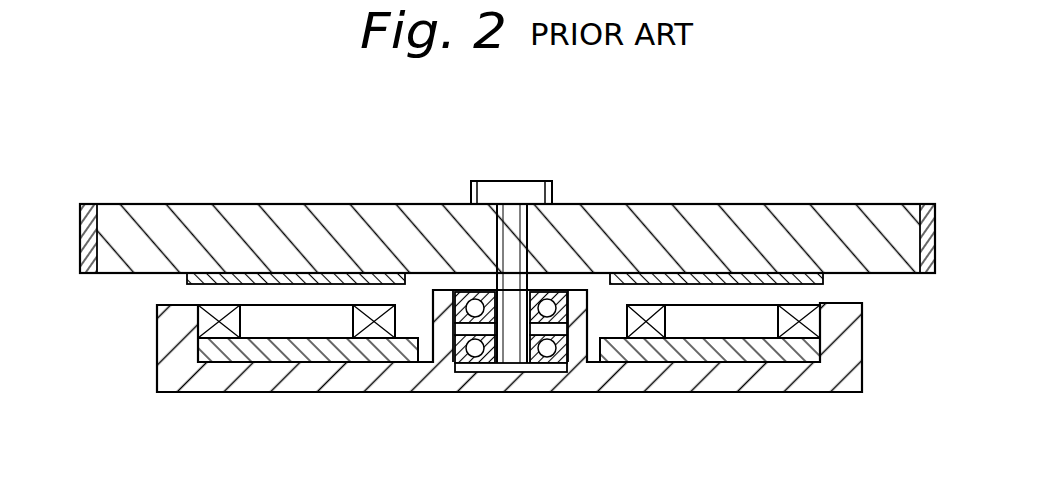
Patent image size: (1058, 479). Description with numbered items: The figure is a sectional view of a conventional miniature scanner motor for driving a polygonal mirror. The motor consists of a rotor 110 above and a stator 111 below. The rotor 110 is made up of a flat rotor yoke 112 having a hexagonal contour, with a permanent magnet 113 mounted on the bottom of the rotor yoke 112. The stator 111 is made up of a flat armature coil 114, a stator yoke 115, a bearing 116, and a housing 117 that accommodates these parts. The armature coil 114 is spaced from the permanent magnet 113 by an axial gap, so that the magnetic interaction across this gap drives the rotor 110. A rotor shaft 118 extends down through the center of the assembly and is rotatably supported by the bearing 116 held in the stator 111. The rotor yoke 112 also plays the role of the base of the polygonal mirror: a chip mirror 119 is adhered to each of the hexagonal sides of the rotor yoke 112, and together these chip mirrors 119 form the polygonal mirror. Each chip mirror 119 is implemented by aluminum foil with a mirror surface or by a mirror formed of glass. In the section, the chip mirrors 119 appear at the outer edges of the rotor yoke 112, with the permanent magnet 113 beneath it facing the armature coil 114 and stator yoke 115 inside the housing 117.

The rotor 110 is at (798, 188).
The stator 111 is at (862, 375).
The rotor yoke 112 is at (273, 218).
The permanent magnet 113 is at (826, 284).
The armature coil 114 is at (350, 320).
The stator yoke 115 is at (405, 352).
The bearing 116 is at (546, 350).
The housing 117 is at (692, 393).
The rotor shaft 118 is at (510, 208).
The chip mirror 119 is at (81, 206).